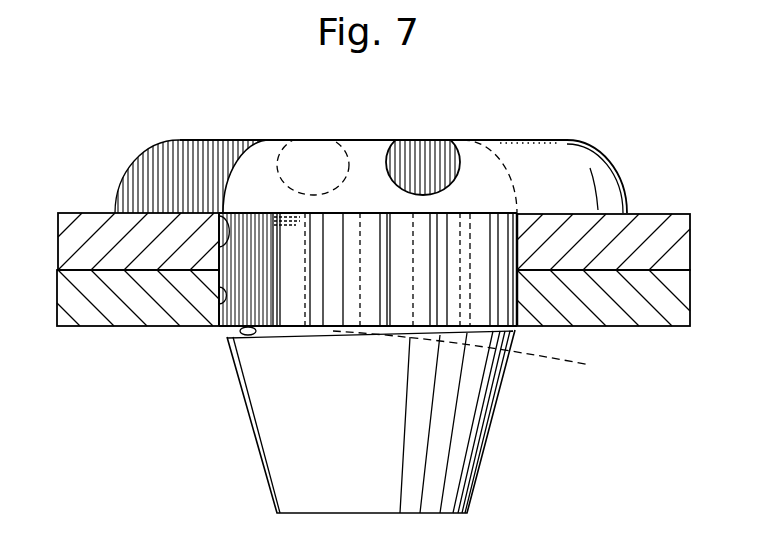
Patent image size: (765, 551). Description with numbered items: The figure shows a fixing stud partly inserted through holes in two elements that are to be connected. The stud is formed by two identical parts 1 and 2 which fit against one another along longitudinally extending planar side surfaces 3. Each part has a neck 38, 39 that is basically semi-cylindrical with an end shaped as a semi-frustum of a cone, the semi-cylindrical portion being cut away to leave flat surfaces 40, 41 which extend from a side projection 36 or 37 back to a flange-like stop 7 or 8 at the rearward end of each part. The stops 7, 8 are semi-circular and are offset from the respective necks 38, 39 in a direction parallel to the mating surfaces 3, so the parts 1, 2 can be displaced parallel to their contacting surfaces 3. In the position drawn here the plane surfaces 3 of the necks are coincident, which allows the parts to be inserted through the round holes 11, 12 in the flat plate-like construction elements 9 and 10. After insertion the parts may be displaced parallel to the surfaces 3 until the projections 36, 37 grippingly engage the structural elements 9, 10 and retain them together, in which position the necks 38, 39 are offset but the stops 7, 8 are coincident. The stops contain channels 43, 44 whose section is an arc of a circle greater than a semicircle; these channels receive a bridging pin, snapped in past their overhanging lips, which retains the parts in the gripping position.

The first part 1 is at (160, 115).
The second part 2 is at (599, 112).
The planar side surface 3 is at (158, 170).
The stop 7 is at (510, 180).
The stop 8 is at (235, 213).
The construction element 9 is at (103, 237).
The construction element 10 is at (90, 302).
The hole 11 is at (255, 193).
The hole 12 is at (217, 311).
The side projection 36 is at (469, 364).
The side projection 37 is at (232, 338).
The neck 38 is at (480, 213).
The neck 39 is at (280, 213).
The flat surface 40 is at (329, 287).
The flat surface 41 is at (403, 294).
The channel 43 is at (294, 150).
The channel 44 is at (433, 165).